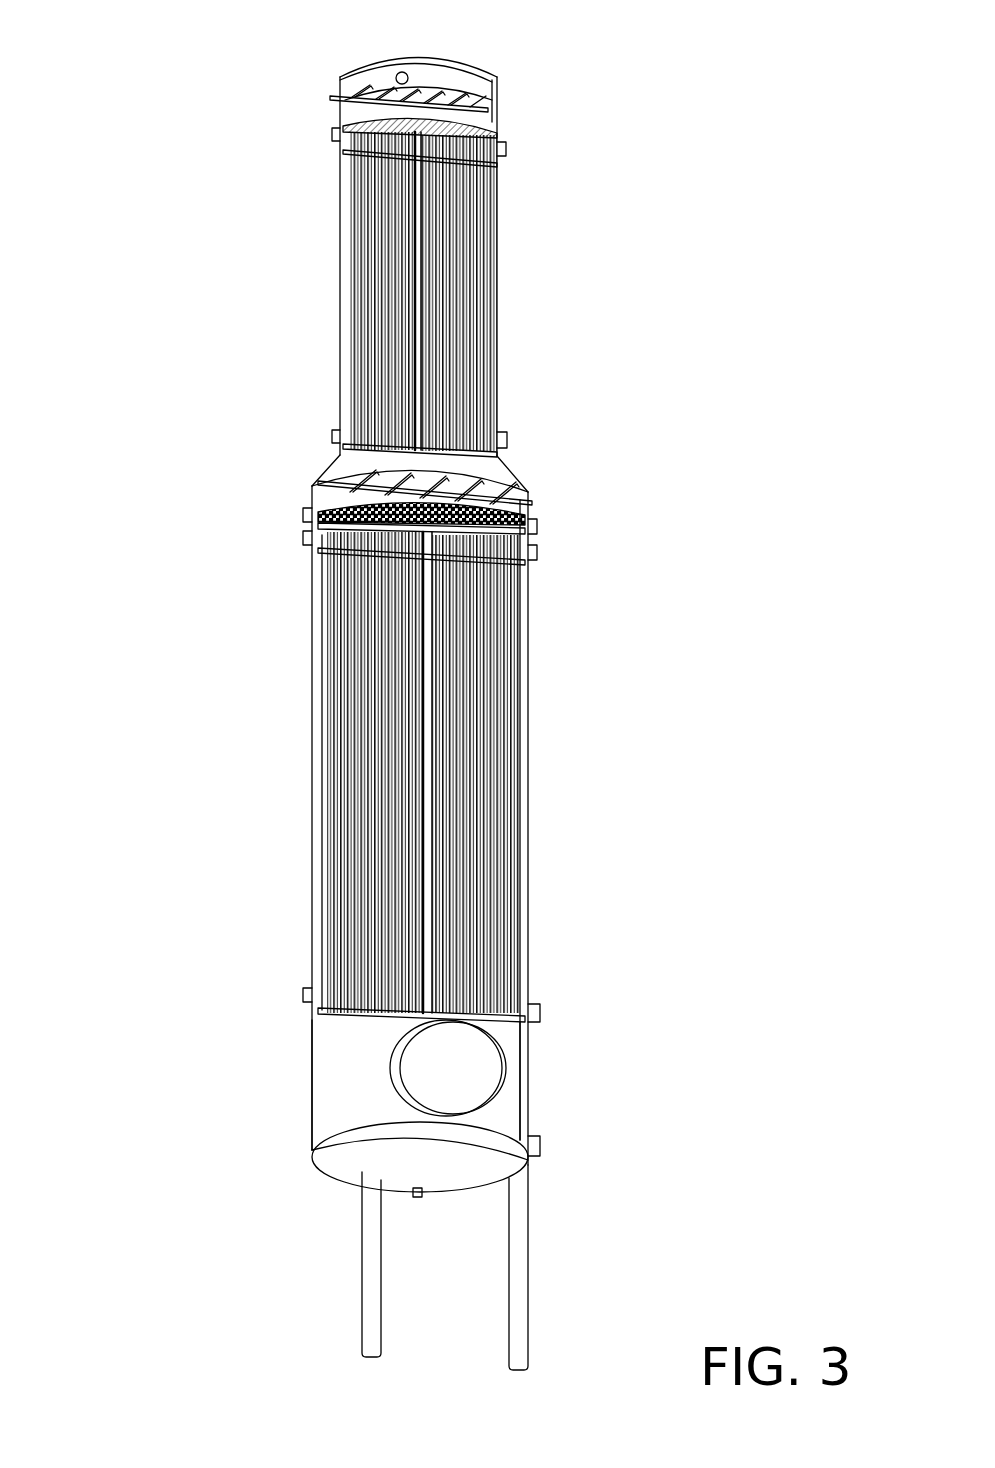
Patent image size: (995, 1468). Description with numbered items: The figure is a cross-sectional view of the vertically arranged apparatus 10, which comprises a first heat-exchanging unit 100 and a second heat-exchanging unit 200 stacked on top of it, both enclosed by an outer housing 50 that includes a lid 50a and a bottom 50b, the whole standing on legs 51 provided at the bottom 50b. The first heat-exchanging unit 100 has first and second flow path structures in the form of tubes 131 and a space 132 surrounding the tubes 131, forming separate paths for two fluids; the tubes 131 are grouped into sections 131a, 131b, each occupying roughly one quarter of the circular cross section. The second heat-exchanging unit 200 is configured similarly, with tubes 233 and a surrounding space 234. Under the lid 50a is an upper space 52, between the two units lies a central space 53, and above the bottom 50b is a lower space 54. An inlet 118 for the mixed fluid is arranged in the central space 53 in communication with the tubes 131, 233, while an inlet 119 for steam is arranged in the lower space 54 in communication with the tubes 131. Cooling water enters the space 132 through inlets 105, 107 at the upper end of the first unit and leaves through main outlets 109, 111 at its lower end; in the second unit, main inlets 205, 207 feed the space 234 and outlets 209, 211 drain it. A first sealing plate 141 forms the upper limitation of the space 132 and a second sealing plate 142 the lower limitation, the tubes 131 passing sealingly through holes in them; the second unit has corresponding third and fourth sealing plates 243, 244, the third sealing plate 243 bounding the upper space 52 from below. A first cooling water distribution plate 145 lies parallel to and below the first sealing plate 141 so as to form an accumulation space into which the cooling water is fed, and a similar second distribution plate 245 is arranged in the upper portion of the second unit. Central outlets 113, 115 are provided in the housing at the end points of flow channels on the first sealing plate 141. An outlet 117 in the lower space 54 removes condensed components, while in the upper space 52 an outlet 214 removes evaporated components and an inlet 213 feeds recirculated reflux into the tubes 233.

The apparatus 10 is at (170, 218).
The outer housing 50 is at (312, 742).
The lid 50a is at (422, 56).
The bottom 50b is at (365, 1168).
The legs 51 is at (362, 1255).
The upper space 52 is at (462, 80).
The central space 53 is at (336, 482).
The lower space 54 is at (352, 1053).
The first heat-exchanging unit 100 is at (560, 694).
The cooling water inlet 105 is at (536, 552).
The cooling water inlet 107 is at (304, 537).
The main cooling water outlet 109 is at (532, 1016).
The main cooling water outlet 111 is at (306, 994).
The central outlet 113 is at (536, 526).
The central outlet 115 is at (330, 497).
The outlet 117 is at (412, 1193).
The inlet 118 is at (528, 508).
The inlet 119 is at (452, 1062).
The tubes 131 is at (485, 780).
The section 131a is at (485, 905).
The section 131b is at (368, 905).
The space 132 is at (318, 692).
The first sealing plate 141 is at (304, 514).
The second sealing plate 142 is at (318, 1018).
The first cooling water distribution plate 145 is at (325, 565).
The second heat-exchanging unit 200 is at (542, 236).
The main cooling water inlet 205 is at (507, 148).
The main cooling water inlet 207 is at (333, 133).
The cooling water outlet 209 is at (508, 446).
The cooling water outlet 211 is at (335, 431).
The inlet 213 is at (332, 95).
The outlet 214 is at (396, 72).
The tubes 233 is at (457, 303).
The space 234 is at (350, 290).
The third sealing plate 243 is at (352, 118).
The fourth sealing plate 244 is at (350, 451).
The second distribution plate 245 is at (345, 162).